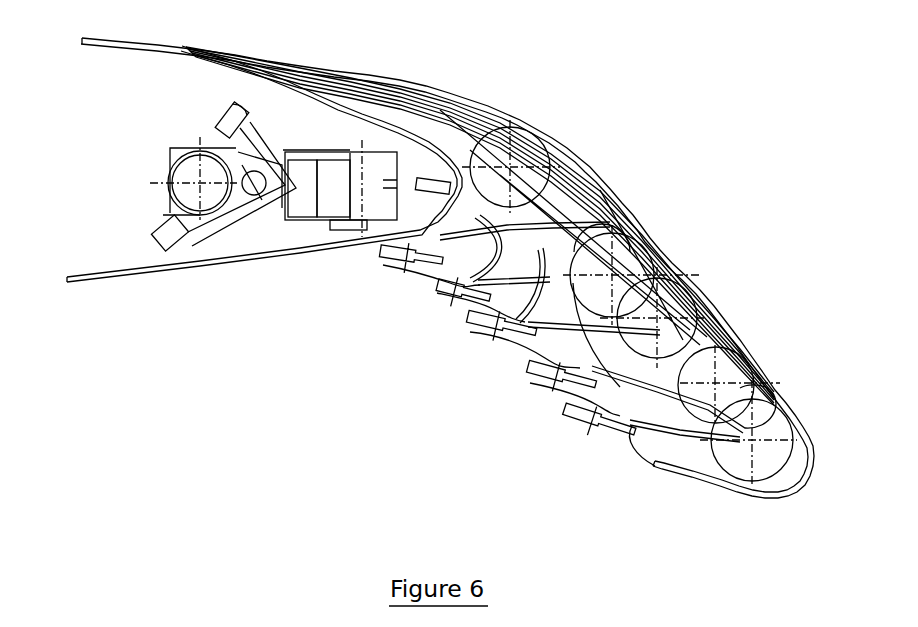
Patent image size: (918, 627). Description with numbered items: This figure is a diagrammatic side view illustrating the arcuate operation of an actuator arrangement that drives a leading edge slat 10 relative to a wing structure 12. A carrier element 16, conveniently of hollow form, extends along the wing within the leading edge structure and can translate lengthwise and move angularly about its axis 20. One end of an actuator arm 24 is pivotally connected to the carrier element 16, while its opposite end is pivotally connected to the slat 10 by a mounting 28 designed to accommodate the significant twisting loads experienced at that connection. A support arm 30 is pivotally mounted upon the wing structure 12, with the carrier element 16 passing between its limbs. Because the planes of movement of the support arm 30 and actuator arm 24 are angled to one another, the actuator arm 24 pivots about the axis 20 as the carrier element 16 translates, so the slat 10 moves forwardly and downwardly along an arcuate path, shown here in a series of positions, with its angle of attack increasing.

The slat 10 is at (687, 490).
The wing structure 12 is at (121, 292).
The carrier element 16 is at (167, 173).
The axis 20 is at (190, 188).
The actuator arm 24 is at (307, 236).
The mounting 28 is at (637, 442).
The support arm 30 is at (218, 253).